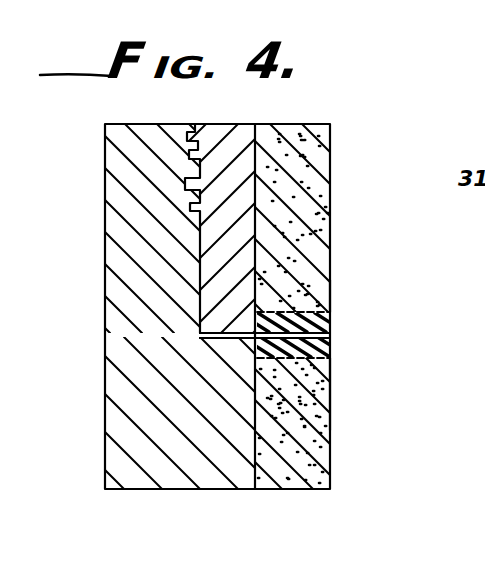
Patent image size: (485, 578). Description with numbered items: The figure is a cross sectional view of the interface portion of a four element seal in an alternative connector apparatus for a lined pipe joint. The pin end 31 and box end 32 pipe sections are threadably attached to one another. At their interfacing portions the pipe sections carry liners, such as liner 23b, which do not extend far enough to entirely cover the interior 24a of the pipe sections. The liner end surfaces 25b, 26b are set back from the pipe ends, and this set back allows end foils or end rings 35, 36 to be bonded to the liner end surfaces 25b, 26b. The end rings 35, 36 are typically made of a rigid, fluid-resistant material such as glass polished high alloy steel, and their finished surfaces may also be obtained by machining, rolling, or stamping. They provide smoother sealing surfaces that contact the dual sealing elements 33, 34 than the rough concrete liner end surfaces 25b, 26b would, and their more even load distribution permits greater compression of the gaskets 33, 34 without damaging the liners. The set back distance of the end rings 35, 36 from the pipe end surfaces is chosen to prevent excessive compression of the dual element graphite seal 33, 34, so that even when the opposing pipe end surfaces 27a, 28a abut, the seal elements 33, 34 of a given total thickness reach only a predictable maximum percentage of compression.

The pin end pipe section 31 is at (105, 162).
The box end pipe section 32 is at (238, 127).
The interior of the pipe sections 24a is at (258, 152).
The liner 23b is at (326, 464).
The liner end surface 25b is at (328, 292).
The liner end surface 26b is at (305, 412).
The end ring 35 is at (330, 312).
The end ring 36 is at (330, 358).
The gasket 33 is at (323, 331).
The gasket 34 is at (325, 343).
The pipe end surface 27a is at (218, 331).
The pipe end surface 28a is at (215, 340).